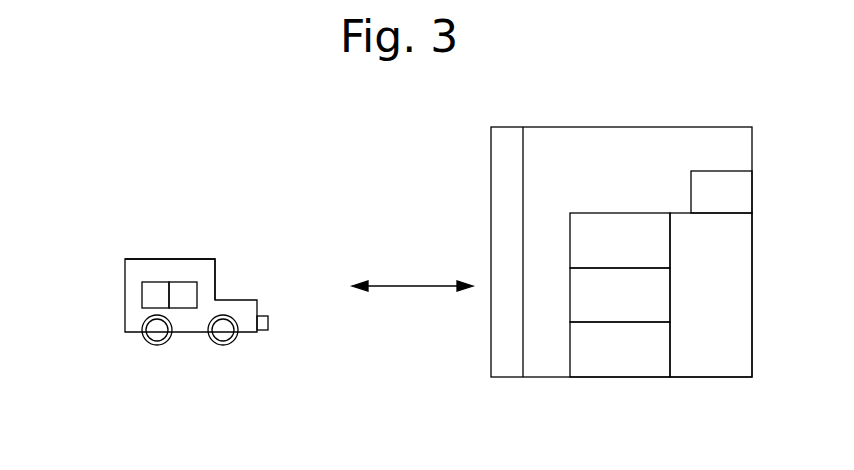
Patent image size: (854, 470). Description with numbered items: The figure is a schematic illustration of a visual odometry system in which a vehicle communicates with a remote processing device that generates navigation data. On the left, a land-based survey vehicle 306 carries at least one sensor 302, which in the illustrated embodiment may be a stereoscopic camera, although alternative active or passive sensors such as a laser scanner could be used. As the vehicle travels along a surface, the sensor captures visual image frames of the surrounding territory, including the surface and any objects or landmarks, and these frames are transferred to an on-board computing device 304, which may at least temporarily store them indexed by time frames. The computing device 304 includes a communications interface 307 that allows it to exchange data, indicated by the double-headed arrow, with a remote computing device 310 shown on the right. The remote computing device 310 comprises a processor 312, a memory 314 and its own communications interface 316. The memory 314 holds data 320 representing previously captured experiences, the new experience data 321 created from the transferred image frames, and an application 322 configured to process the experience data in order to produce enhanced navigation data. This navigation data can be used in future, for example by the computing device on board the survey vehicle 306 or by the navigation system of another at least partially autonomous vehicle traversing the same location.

The sensor 302 is at (270, 326).
The computing device 304 is at (150, 298).
The vehicle 306 is at (165, 259).
The communications interface 307 is at (196, 291).
The remote computing device 310 is at (640, 127).
The processor 312 is at (702, 204).
The memory 314 is at (690, 310).
The communications interface 316 is at (503, 185).
The data representing previously captured experiences 320 is at (600, 252).
The new experience data 321 is at (600, 310).
The application 322 is at (600, 360).